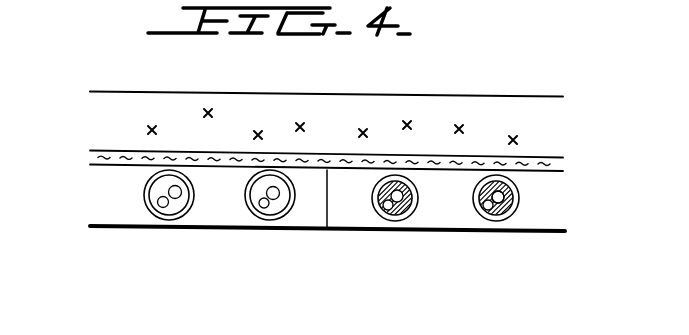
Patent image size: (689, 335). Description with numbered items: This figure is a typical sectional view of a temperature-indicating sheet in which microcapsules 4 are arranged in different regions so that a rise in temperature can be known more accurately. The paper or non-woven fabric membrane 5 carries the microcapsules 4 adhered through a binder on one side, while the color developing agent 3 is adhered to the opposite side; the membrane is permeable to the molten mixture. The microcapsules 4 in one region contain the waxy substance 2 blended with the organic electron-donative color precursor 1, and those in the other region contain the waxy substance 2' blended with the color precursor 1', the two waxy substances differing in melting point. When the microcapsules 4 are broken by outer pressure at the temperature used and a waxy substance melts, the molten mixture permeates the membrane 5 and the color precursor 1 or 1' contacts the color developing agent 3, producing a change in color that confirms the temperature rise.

The organic electron-donative color precursor 1 is at (270, 221).
The color precursor 1' is at (496, 248).
The waxy substance 2 is at (169, 222).
The waxy substance 2' is at (545, 204).
The color developing agent 3 is at (300, 122).
The microcapsules 4 is at (403, 217).
The paper or non-woven fabric membrane 5 is at (90, 155).